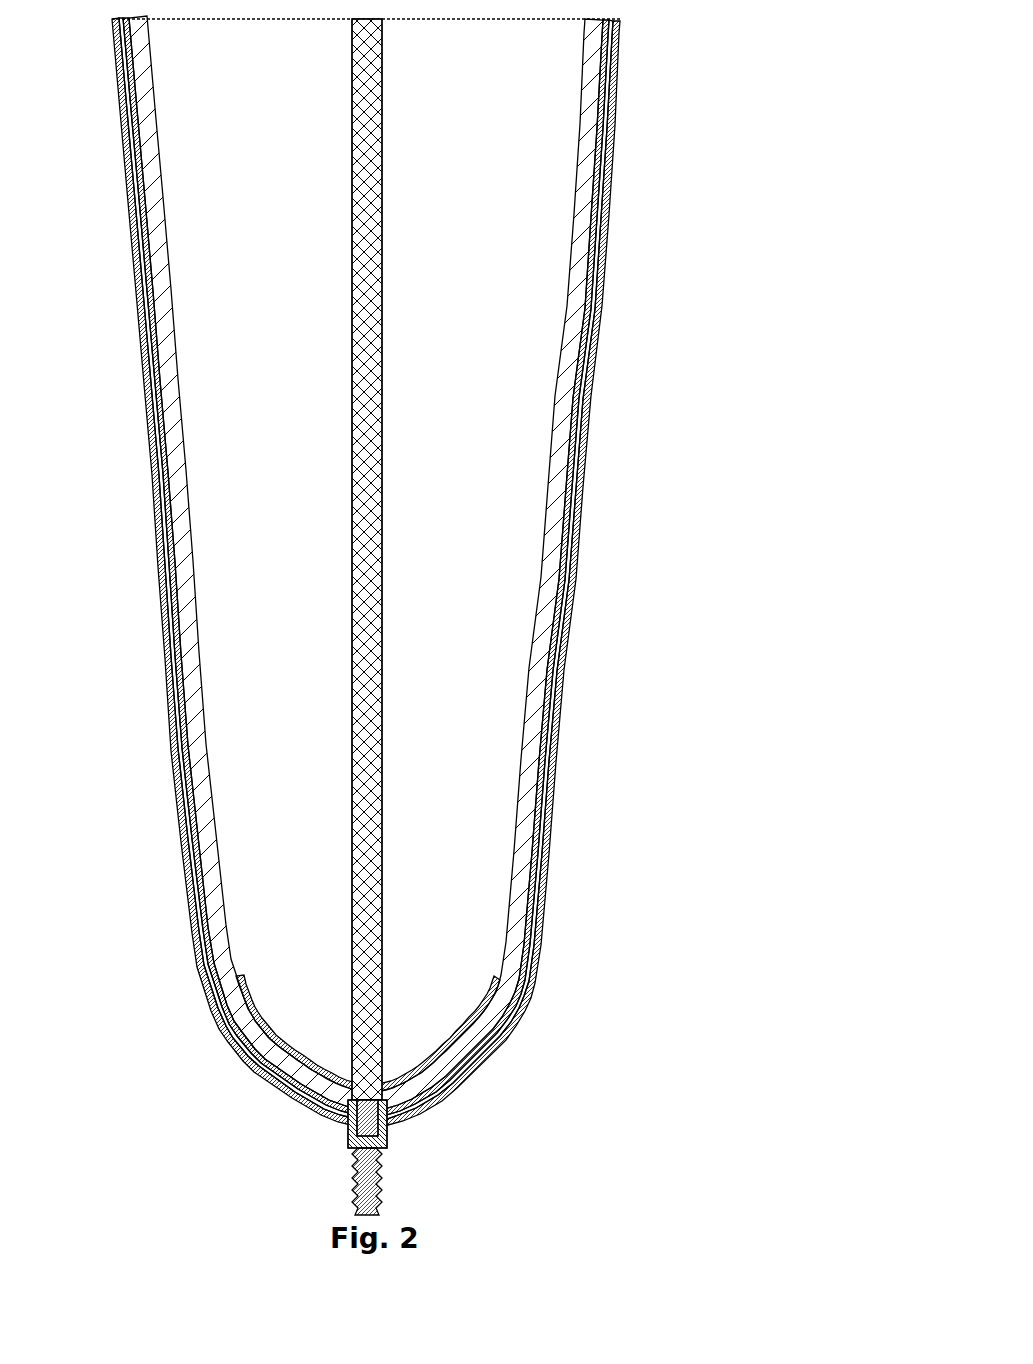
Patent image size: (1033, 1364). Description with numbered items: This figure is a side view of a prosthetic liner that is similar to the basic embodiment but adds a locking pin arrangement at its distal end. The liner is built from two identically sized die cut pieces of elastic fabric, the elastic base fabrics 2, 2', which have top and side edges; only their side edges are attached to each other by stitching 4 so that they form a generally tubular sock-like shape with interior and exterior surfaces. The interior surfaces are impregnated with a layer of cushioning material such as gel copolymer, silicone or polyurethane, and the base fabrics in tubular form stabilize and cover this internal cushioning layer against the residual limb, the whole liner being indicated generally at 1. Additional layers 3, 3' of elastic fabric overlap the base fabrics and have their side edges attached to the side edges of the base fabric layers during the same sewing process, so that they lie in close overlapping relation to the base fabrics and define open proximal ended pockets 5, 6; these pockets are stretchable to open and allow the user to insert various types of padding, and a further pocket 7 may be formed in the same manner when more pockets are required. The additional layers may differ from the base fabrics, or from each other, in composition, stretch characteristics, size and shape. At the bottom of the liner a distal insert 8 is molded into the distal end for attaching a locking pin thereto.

The socket wall 1 is at (583, 188).
The elastic base fabric 2 is at (529, 574).
The elastic base fabric 2' is at (203, 573).
The additional layer of elastic fabric 3 is at (529, 568).
The additional layer of elastic fabric 3' is at (203, 567).
The stitching 4 is at (370, 713).
The pocket 5 is at (553, 738).
The pocket 6 is at (177, 780).
The pocket 7 is at (532, 1010).
The distal insert 8 is at (390, 1133).